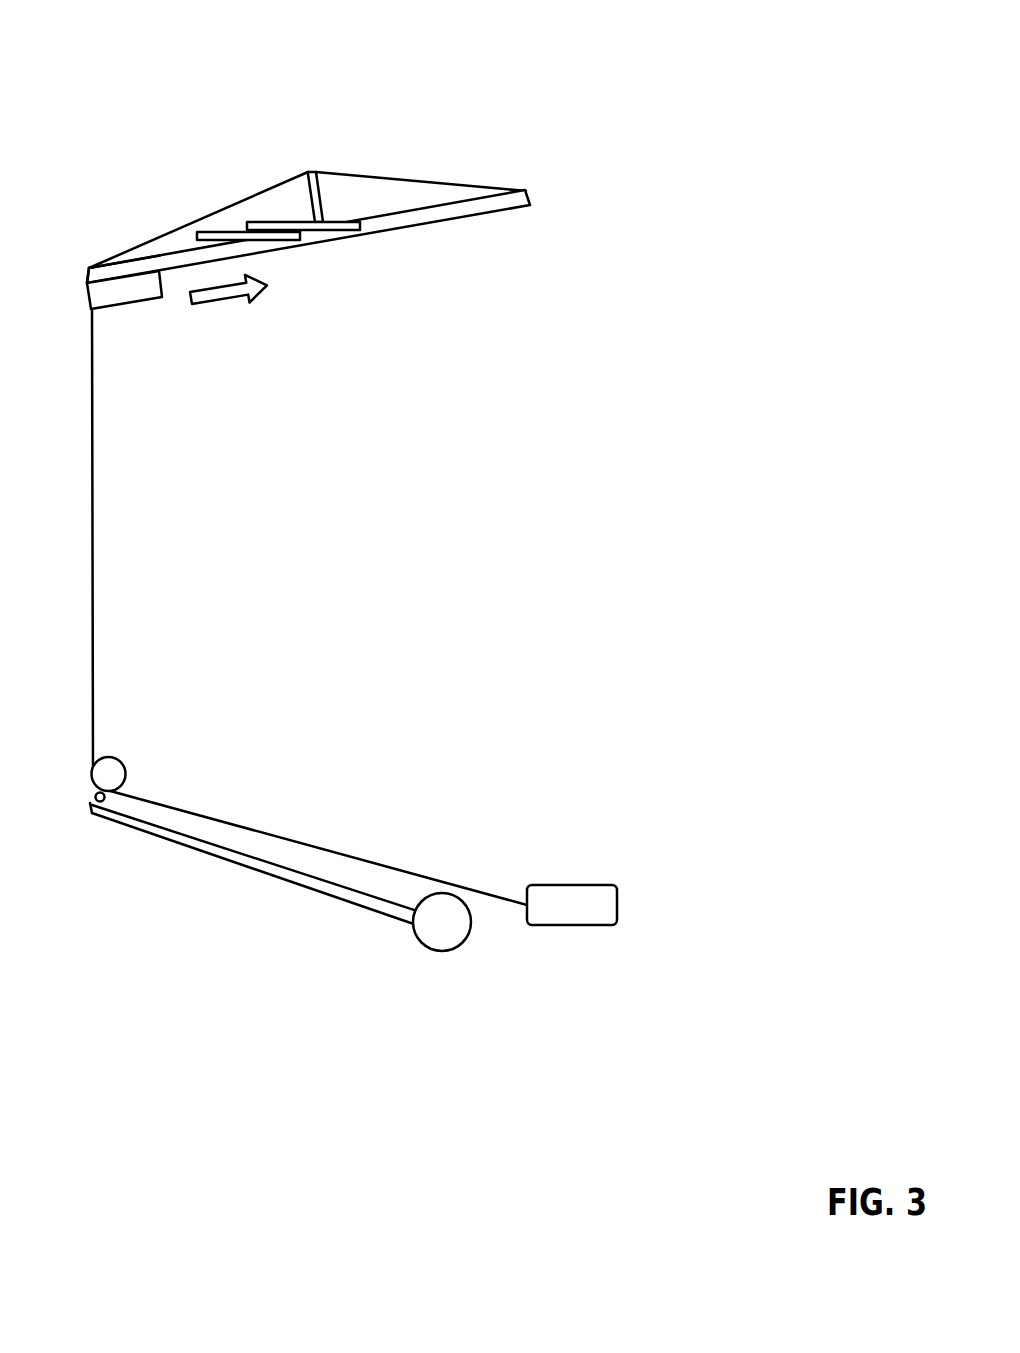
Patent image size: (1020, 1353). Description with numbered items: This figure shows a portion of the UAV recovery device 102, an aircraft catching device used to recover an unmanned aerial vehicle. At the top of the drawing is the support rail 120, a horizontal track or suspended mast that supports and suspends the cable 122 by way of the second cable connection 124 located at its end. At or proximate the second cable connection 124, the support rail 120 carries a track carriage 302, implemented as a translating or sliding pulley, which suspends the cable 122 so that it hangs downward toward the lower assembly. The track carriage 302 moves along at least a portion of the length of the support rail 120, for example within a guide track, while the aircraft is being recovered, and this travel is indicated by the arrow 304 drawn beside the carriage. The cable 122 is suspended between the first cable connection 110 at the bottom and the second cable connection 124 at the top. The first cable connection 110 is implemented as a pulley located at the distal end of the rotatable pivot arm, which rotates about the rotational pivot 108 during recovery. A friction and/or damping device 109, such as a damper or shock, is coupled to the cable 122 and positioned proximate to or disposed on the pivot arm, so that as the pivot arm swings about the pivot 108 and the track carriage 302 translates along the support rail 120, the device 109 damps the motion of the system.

The UAV recovery device 102 is at (553, 79).
The support rail 120 is at (502, 210).
The second cable connection 124 is at (98, 265).
The track carriage 302 is at (117, 302).
The arrow 304 is at (213, 303).
The cable 122 is at (93, 472).
The first cable connection 110 is at (95, 803).
The rotational pivot 108 is at (442, 952).
The friction and/or damping device 109 is at (575, 887).